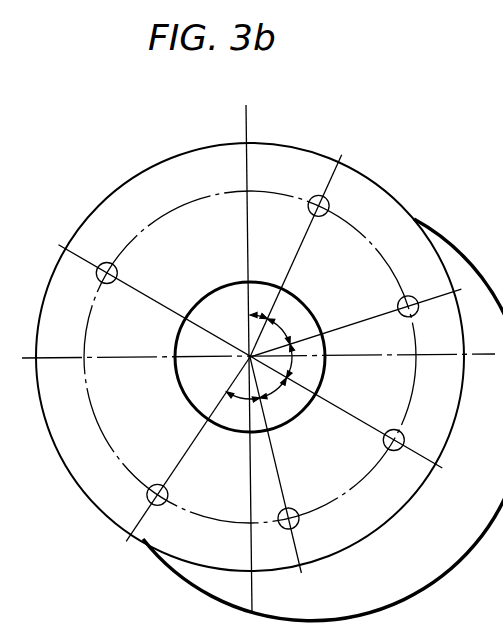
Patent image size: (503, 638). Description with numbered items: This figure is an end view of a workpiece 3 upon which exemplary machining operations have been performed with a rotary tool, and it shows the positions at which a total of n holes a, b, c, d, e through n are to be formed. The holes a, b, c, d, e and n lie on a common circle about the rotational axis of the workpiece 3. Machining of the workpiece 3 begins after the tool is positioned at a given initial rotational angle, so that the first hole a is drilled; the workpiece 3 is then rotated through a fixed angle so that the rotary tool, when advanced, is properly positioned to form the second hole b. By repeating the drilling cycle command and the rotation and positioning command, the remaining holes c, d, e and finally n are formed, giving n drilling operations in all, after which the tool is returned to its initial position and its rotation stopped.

The workpiece 3 is at (301, 152).
The hole a is at (325, 205).
The hole b is at (415, 311).
The hole c is at (393, 452).
The hole d is at (294, 522).
The hole e is at (160, 505).
The hole n is at (106, 263).